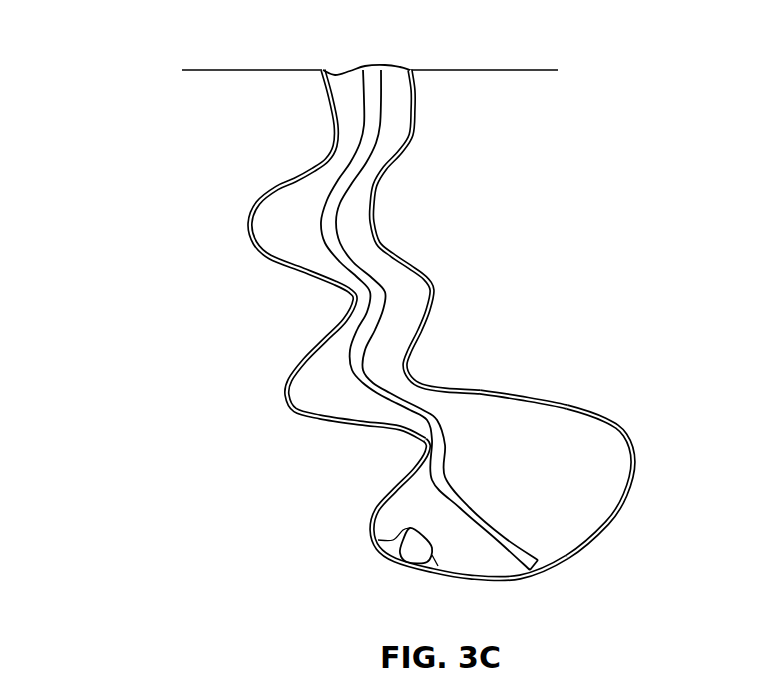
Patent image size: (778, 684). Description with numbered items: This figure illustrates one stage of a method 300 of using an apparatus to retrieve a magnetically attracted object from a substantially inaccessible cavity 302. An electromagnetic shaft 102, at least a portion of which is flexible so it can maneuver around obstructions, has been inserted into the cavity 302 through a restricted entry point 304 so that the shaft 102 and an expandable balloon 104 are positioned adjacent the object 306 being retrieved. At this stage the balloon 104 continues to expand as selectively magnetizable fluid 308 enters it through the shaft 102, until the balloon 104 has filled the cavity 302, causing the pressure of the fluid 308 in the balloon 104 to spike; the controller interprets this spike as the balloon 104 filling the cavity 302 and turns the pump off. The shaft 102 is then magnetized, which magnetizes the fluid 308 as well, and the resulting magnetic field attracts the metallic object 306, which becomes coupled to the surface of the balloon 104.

The method 300 is at (117, 145).
The restricted entry point 304 is at (327, 63).
The expandable balloon 104 is at (377, 175).
The electromagnetic shaft 102 is at (383, 290).
The substantially inaccessible cavity 302 is at (610, 400).
The fluid 308 is at (597, 508).
The object 306 is at (407, 562).